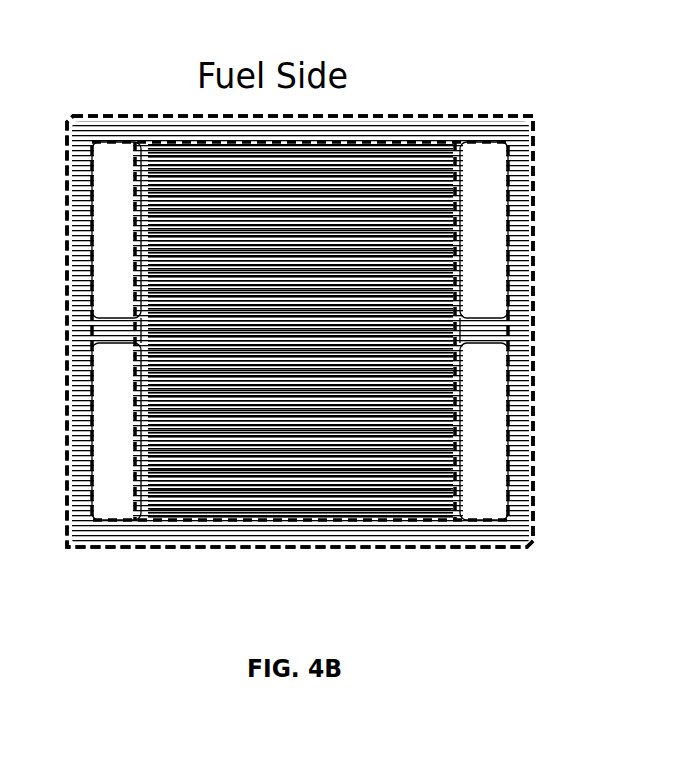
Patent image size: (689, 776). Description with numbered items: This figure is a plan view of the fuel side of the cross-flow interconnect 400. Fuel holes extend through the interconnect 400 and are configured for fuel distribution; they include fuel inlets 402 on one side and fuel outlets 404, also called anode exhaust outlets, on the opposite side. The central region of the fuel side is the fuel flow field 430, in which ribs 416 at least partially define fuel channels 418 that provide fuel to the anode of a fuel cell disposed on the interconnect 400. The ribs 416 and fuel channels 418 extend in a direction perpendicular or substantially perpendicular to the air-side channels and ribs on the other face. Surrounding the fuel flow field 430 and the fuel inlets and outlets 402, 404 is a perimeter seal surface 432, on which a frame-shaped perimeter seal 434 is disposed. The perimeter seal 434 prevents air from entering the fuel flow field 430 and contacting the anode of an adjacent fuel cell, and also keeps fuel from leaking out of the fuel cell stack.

The interconnect 400 is at (158, 80).
The fuel inlet 402 is at (503, 212).
The fuel outlet 404 is at (135, 212).
The rib 416 is at (310, 195).
The fuel channel 418 is at (198, 463).
The fuel flow field 430 is at (308, 128).
The perimeter seal surface 432 is at (302, 548).
The perimeter seal 434 is at (459, 120).